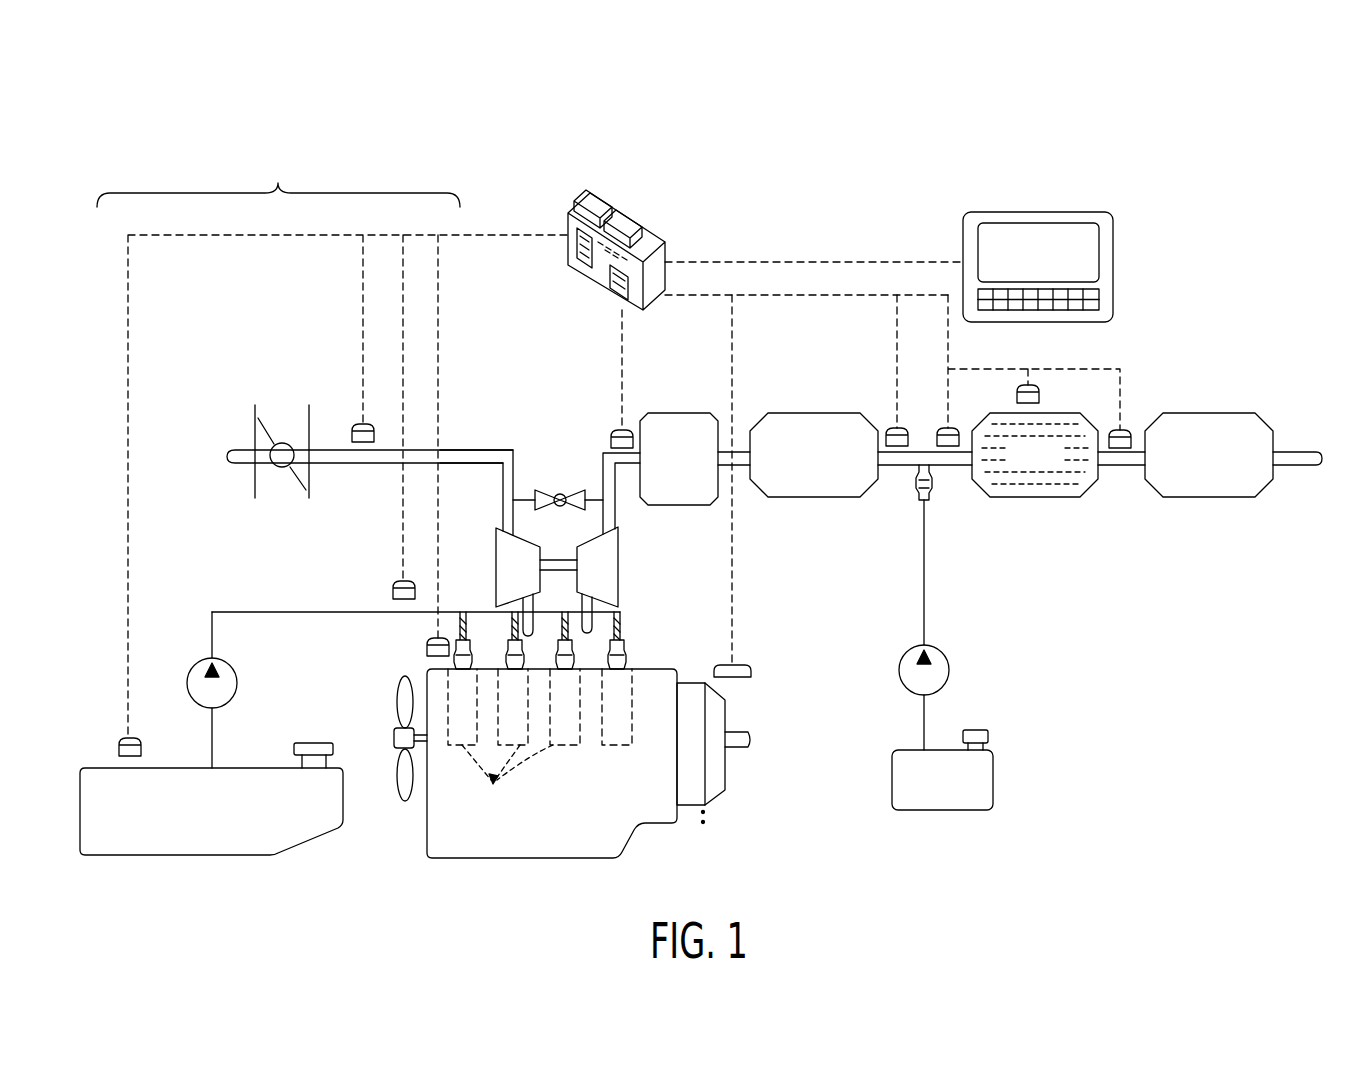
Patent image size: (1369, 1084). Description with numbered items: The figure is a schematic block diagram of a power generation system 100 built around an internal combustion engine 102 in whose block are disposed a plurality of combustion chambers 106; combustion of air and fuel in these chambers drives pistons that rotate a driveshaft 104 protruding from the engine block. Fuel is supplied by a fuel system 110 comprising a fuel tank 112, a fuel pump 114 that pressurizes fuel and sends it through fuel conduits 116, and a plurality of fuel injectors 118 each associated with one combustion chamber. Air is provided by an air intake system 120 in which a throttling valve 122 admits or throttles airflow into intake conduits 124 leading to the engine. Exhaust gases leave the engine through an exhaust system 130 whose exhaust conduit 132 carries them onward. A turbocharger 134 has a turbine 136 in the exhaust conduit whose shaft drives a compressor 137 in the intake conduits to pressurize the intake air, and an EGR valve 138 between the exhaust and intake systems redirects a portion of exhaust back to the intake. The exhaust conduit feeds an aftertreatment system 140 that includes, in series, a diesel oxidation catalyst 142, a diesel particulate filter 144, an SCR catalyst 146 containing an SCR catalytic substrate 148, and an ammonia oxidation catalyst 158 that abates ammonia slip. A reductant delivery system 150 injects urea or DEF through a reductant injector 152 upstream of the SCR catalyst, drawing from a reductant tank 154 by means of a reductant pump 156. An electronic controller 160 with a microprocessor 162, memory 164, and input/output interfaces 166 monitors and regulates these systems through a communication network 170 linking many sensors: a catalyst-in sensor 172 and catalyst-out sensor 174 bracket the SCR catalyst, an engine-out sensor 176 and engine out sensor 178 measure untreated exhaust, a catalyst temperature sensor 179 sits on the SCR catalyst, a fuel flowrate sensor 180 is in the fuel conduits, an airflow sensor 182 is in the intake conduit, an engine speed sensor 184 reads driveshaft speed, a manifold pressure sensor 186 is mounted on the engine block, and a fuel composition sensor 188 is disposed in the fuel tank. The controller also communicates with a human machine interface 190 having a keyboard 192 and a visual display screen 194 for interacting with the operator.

The power generation system 100 is at (375, 122).
The internal combustion engine 102 is at (592, 763).
The driveshaft 104 is at (752, 740).
The combustion chambers 106 is at (540, 743).
The fuel system 110 is at (382, 724).
The fuel tank 112 is at (233, 855).
The fuel pump 114 is at (238, 680).
The fuel conduits 116 is at (290, 612).
The fuel injectors 118 is at (512, 640).
The air intake system 120 is at (195, 405).
The throttling valve 122 is at (279, 441).
The intake conduits 124 is at (457, 450).
The exhaust system 130 is at (598, 497).
The exhaust conduit 132 is at (616, 512).
The turbocharger 134 is at (677, 552).
The turbine 136 is at (620, 565).
The compressor 137 is at (498, 530).
The EGR valve 138 is at (558, 490).
The aftertreatment system 140 is at (759, 421).
The diesel oxidation catalyst 142 is at (680, 413).
The diesel particulate filter 144 is at (814, 427).
The SCR catalyst 146 is at (1039, 436).
The SCR catalytic substrate 148 is at (1040, 477).
The reductant delivery system 150 is at (924, 659).
The reductant injector 152 is at (930, 500).
The reductant tank 154 is at (952, 795).
The reductant pump 156 is at (949, 670).
The ammonia oxidation catalyst 158 is at (1215, 413).
The electronic controller 160 is at (738, 247).
The microprocessor 162 is at (572, 255).
The memory 164 is at (660, 252).
The input/output interfaces 166 is at (612, 287).
The communication network 170 is at (332, 434).
The catalyst-in sensor 172 is at (940, 428).
The catalyst-out sensor 174 is at (1128, 430).
The engine-out sensor 176 is at (612, 434).
The engine out sensor 178 is at (893, 428).
The catalyst temperature sensor 179 is at (1032, 385).
The fuel flowrate sensor 180 is at (393, 592).
The airflow sensor 182 is at (358, 424).
The engine speed sensor 184 is at (752, 672).
The manifold pressure sensor 186 is at (427, 650).
The fuel composition sensor 188 is at (121, 738).
The human machine interface 190 is at (1047, 267).
The keyboard 192 is at (1098, 302).
The visual display screen 194 is at (985, 245).